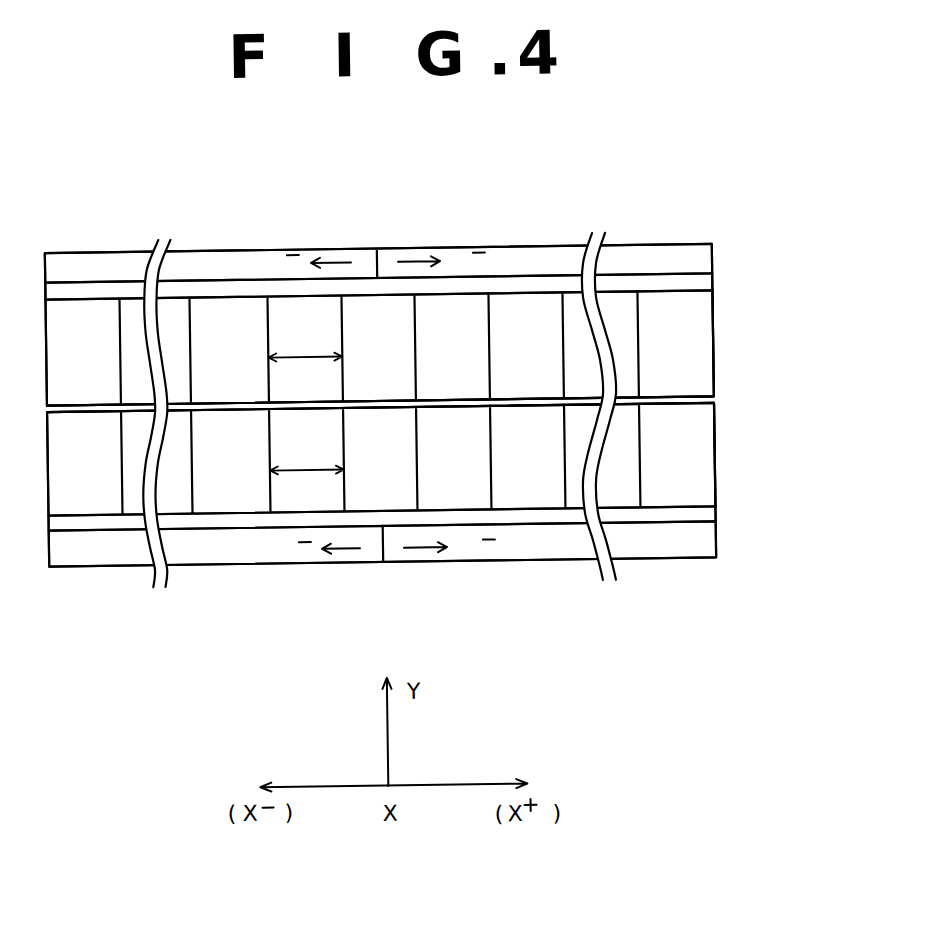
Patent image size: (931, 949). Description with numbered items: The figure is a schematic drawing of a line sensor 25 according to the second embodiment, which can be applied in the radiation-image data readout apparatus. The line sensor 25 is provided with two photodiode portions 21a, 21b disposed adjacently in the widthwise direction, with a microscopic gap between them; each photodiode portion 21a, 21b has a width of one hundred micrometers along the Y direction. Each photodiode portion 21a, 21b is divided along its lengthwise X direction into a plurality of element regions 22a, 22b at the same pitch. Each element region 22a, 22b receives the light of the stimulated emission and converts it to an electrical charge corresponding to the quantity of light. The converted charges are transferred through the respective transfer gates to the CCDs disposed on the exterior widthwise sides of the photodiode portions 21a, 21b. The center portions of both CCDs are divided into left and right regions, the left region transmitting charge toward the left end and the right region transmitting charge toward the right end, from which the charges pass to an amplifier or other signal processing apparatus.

The line sensor 25 is at (614, 189).
The element region 22a is at (699, 360).
The photodiode portion 21a is at (714, 382).
The photodiode portion 21b is at (717, 433).
The element region 22b is at (702, 465).